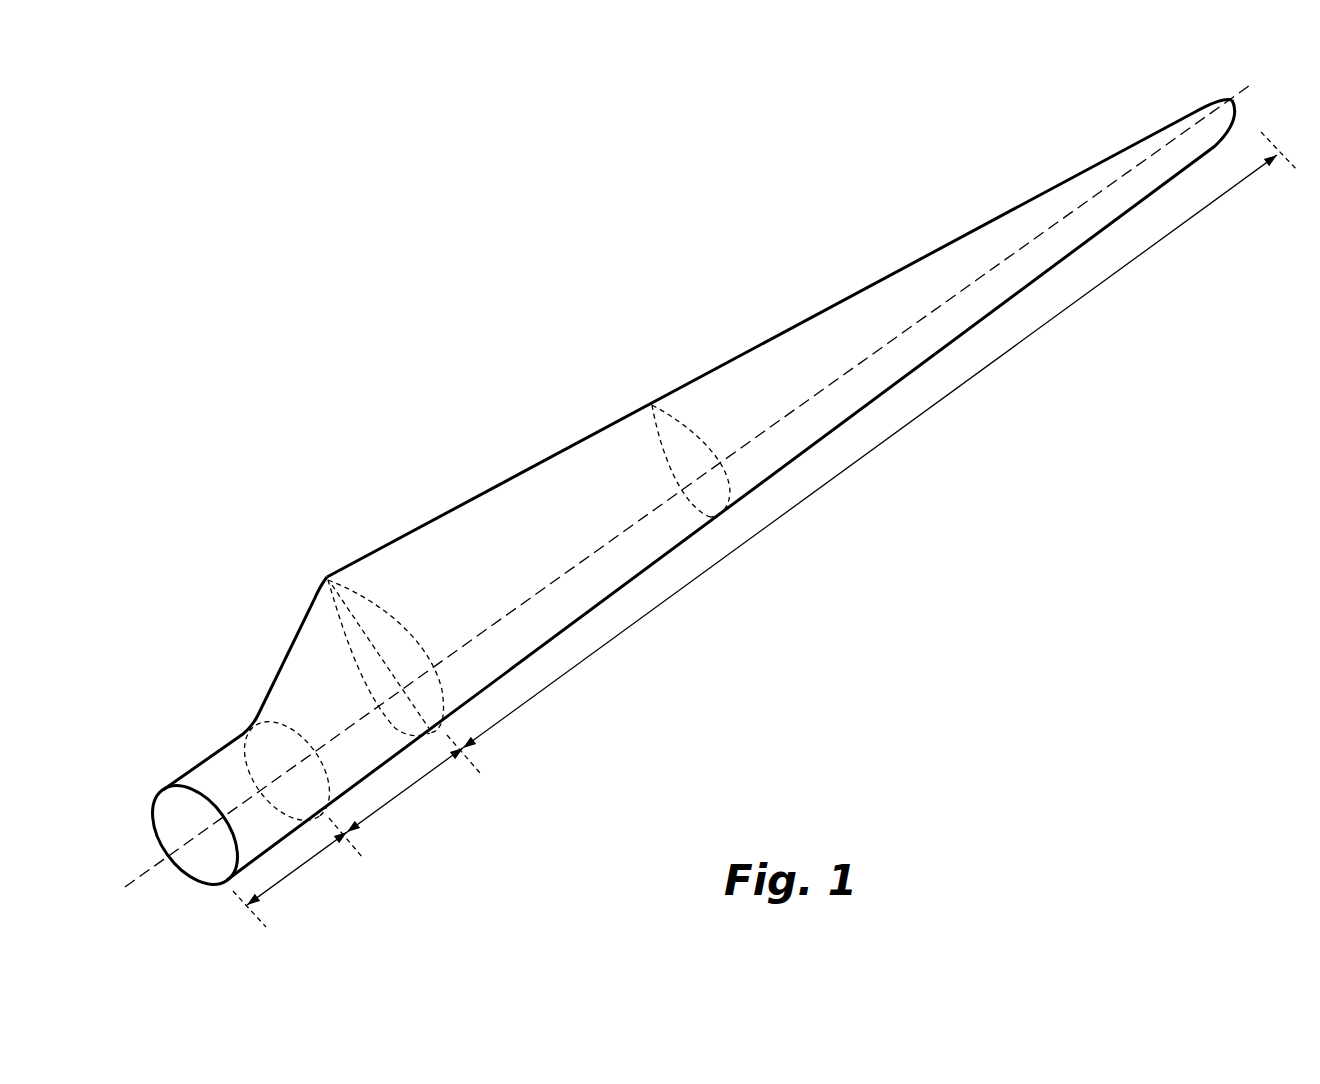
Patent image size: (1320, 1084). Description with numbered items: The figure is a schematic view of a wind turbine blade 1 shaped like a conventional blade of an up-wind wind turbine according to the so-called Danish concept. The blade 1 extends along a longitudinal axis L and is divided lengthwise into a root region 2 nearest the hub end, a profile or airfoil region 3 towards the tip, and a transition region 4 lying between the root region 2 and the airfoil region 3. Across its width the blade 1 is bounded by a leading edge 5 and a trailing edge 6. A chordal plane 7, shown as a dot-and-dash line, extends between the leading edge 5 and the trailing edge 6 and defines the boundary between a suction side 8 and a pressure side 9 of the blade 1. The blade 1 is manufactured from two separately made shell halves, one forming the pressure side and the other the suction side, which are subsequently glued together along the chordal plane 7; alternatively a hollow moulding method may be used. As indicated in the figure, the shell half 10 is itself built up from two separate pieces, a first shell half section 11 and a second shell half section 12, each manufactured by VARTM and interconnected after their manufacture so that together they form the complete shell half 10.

The wind turbine blade 1 is at (505, 349).
The root region 2 is at (300, 867).
The airfoil region 3 is at (790, 515).
The transition region 4 is at (407, 790).
The leading edge 5 is at (910, 373).
The trailing edge 6 is at (915, 263).
The chordal plane 7 is at (183, 820).
The suction side 8 is at (497, 517).
The pressure side 9 is at (647, 437).
The shell half 10 is at (590, 490).
The first shell half section 11 is at (545, 520).
The second shell half section 12 is at (733, 413).
The longitudinal axis L is at (1245, 92).